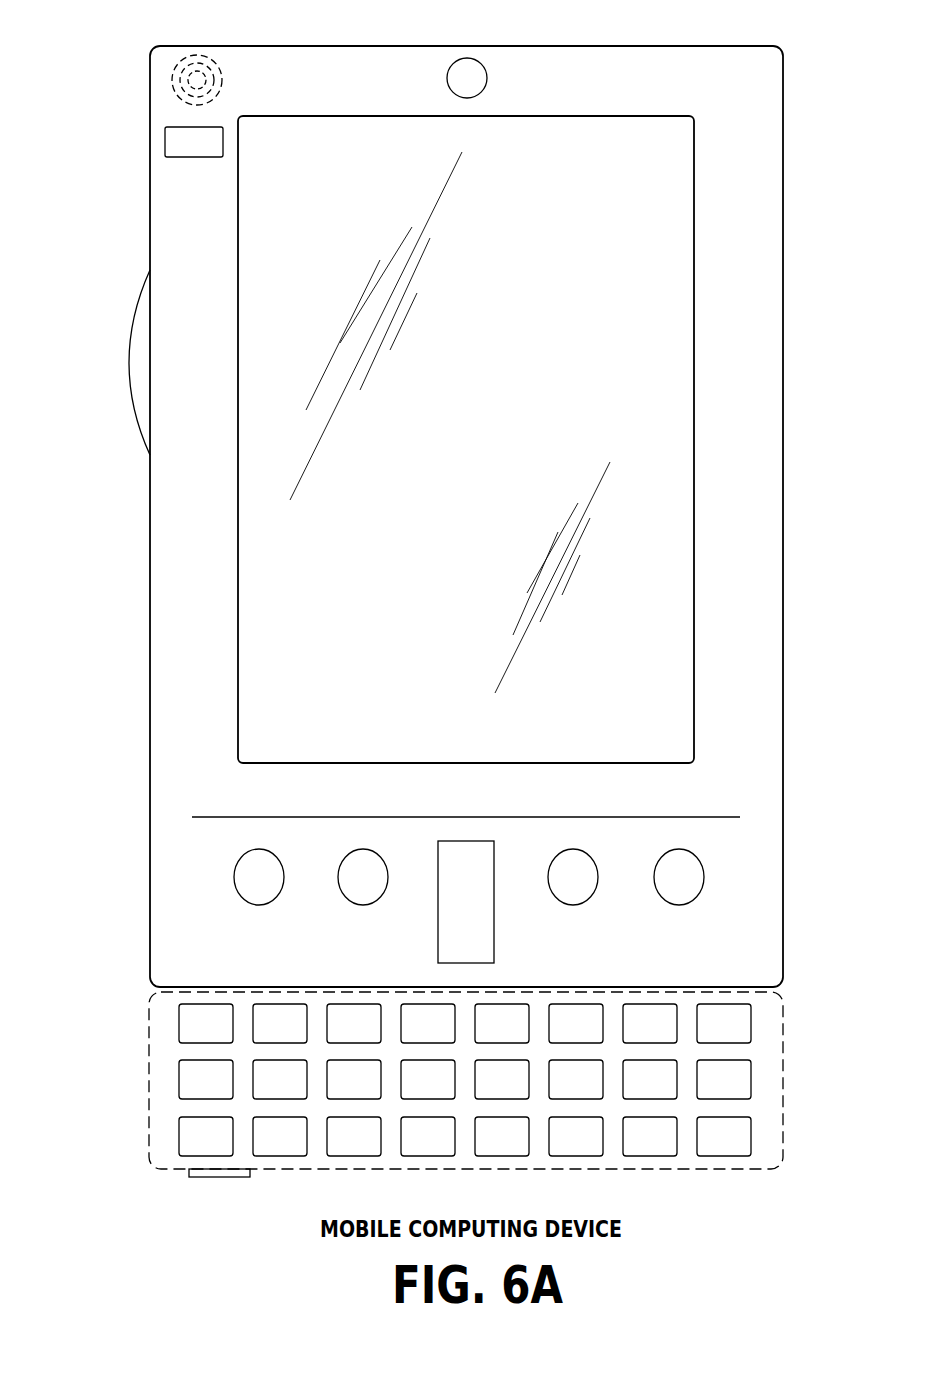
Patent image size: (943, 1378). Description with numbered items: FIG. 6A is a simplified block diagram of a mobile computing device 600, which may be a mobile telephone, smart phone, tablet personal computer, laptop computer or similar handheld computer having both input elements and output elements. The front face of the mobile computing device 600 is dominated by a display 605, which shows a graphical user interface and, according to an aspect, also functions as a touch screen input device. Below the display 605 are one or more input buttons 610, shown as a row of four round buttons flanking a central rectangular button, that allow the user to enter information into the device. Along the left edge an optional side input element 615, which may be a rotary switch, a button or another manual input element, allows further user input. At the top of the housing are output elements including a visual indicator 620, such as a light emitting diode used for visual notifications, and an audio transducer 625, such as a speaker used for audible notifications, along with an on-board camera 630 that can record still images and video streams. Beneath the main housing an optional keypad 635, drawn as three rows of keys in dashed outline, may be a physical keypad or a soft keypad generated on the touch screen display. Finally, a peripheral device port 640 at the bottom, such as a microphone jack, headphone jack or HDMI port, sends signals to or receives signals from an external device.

The mobile computing device 600 is at (748, 46).
The display 605 is at (260, 607).
The input buttons 610 is at (259, 905).
The side input element 615 is at (128, 362).
The visual indicator 620 is at (165, 142).
The audio transducer 625 is at (170, 80).
The on-board camera 630 is at (467, 58).
The keypad 635 is at (160, 1078).
The peripheral device port 640 is at (196, 1178).